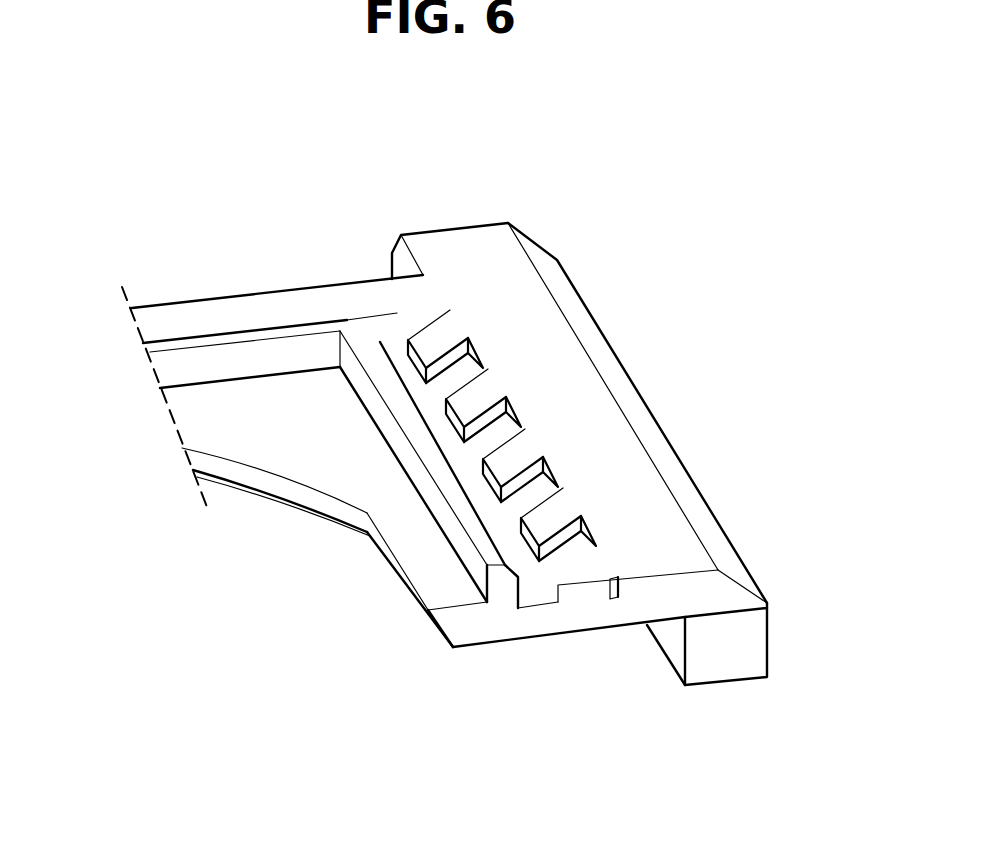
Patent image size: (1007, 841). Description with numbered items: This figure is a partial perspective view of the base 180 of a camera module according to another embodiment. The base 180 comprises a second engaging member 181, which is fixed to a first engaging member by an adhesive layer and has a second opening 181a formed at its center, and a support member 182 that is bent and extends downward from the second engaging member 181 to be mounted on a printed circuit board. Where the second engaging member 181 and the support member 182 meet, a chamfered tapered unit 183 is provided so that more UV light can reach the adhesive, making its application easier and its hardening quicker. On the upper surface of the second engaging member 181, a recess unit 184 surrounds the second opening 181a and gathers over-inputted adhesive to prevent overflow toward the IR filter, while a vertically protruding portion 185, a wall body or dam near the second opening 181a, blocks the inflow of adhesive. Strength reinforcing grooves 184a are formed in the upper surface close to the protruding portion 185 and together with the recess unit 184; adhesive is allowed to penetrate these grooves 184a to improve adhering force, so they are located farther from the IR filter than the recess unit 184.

The base 180 is at (46, 129).
The second engaging member 181 is at (508, 297).
The second opening 181a is at (252, 473).
The support member 182 is at (733, 673).
The tapered unit 183 is at (658, 443).
The recess unit 184 is at (543, 592).
The strength reinforcing grooves 184a is at (567, 550).
The protruding portion 185 is at (317, 324).